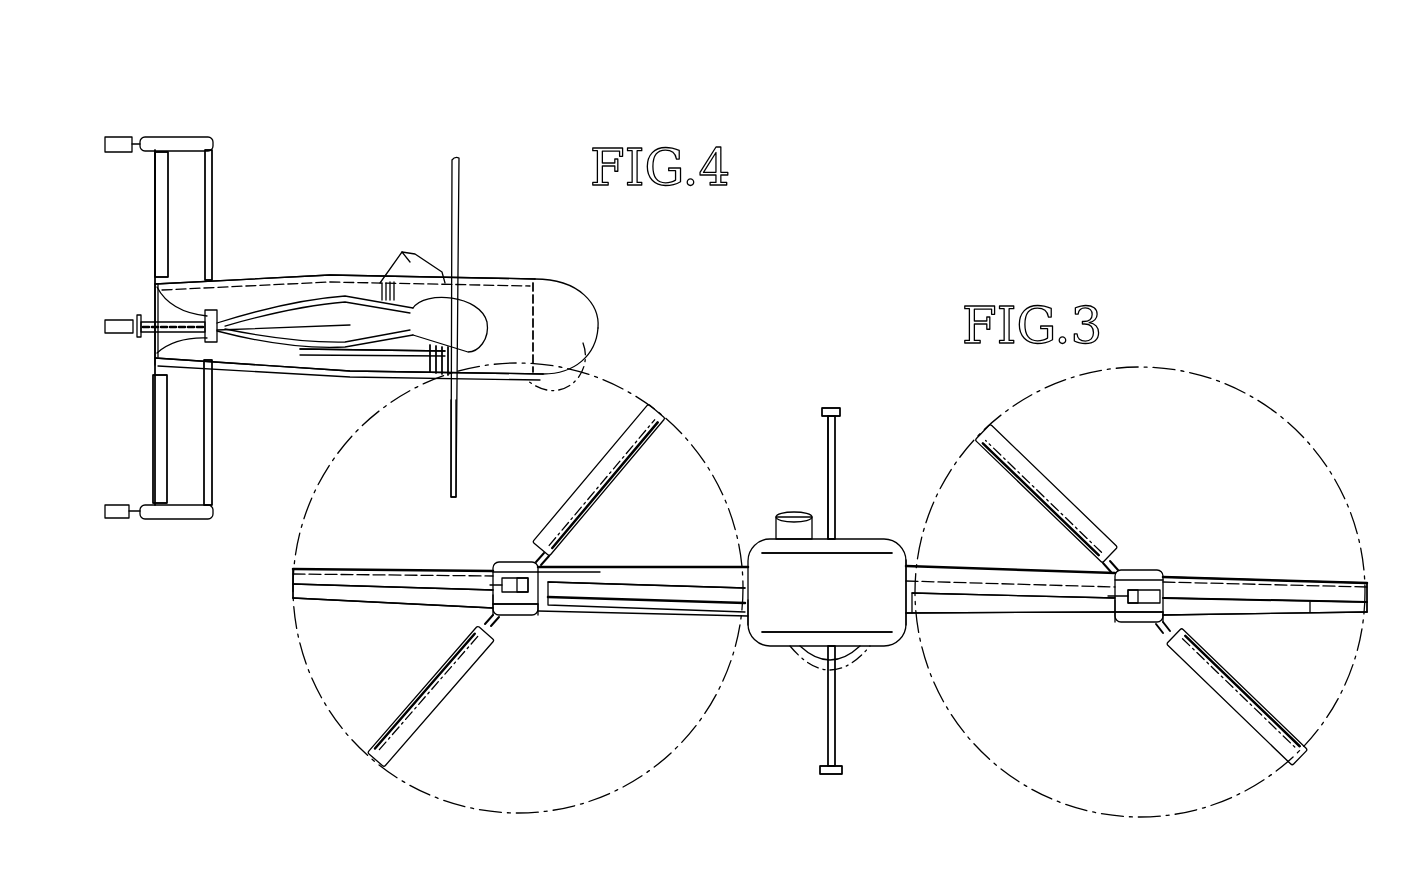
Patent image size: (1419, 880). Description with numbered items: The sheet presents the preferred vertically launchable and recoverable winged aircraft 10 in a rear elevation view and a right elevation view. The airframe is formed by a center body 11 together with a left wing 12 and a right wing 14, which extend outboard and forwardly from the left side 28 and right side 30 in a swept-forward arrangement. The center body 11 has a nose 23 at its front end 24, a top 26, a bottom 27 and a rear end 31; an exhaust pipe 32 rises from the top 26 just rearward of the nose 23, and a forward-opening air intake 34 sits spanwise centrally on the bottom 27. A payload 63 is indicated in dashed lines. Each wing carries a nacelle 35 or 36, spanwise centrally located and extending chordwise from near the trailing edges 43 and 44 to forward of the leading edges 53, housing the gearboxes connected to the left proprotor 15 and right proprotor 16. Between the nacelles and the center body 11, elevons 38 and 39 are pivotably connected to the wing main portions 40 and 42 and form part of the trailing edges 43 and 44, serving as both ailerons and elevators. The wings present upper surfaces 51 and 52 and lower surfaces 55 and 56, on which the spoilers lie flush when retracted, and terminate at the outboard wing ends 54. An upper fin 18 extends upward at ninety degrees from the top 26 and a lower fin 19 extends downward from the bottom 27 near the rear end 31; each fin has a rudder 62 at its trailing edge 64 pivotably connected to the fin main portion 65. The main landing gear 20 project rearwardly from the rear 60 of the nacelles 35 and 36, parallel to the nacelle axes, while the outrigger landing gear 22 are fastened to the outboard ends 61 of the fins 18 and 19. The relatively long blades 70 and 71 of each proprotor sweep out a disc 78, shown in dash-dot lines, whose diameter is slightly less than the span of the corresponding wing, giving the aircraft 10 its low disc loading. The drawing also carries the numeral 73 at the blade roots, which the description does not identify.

In FIG. 4, the vertically launchable and recoverable winged aircraft 10 is at (531, 213).
In FIG. 3, the vertically launchable and recoverable winged aircraft 10 is at (1066, 674).
In FIG. 4, the center body 11 is at (296, 277).
In FIG. 3, the center body 11 is at (915, 556).
In FIG. 3, the left wing 12 is at (371, 570).
In FIG. 4, the right wing 14 is at (349, 300).
In FIG. 3, the right wing 14 is at (1255, 580).
In FIG. 3, the left proprotor 15 is at (506, 626).
In FIG. 4, the right proprotor 16 is at (478, 355).
In FIG. 3, the right proprotor 16 is at (1158, 632).
In FIG. 4, the upper directional stabilizer or fin 18 is at (213, 186).
In FIG. 3, the upper directional stabilizer or fin 18 is at (836, 436).
In FIG. 4, the lower directional stabilizer or fin 19 is at (213, 455).
In FIG. 3, the lower directional stabilizer or fin 19 is at (840, 762).
In FIG. 4, the main landing gear 20 is at (121, 335).
In FIG. 3, the main landing gear 20 is at (515, 578).
In FIG. 4, the outrigger landing gear 22 is at (107, 150).
In FIG. 3, the outrigger landing gear 22 is at (838, 408).
In FIG. 4, the nose 23 is at (570, 290).
In FIG. 4, the front end 24 is at (599, 318).
In FIG. 4, the top 26 is at (255, 278).
In FIG. 3, the top 26 is at (878, 545).
In FIG. 4, the bottom 27 is at (315, 373).
In FIG. 3, the bottom 27 is at (775, 646).
In FIG. 3, the left side 28 is at (754, 646).
In FIG. 4, the right side 30 is at (242, 303).
In FIG. 3, the right side 30 is at (915, 627).
In FIG. 4, the rear end 31 is at (155, 292).
In FIG. 3, the rear end 31 is at (839, 592).
In FIG. 4, the exhaust pipe 32 is at (404, 262).
In FIG. 3, the exhaust pipe 32 is at (789, 512).
In FIG. 4, the air intake 34 is at (411, 373).
In FIG. 3, the air intake 34 is at (811, 662).
In FIG. 3, the nacelle 35 is at (540, 612).
In FIG. 4, the nacelle 36 is at (382, 352).
In FIG. 3, the nacelle 36 is at (1119, 619).
In FIG. 3, the elevon 38 is at (680, 604).
In FIG. 3, the elevon 39 is at (999, 600).
In FIG. 3, the wing main portion 40 is at (639, 566).
In FIG. 3, the wing main portion 42 is at (979, 575).
In FIG. 3, the wing trailing edge 43 is at (374, 591).
In FIG. 4, the wing trailing edge 44 is at (221, 345).
In FIG. 3, the wing trailing edge 44 is at (1310, 606).
In FIG. 3, the upper surface 51 is at (696, 566).
In FIG. 4, the upper surface 52 is at (330, 300).
In FIG. 3, the upper surface 52 is at (1215, 580).
In FIG. 4, the wing leading edge 53 is at (454, 305).
In FIG. 4, the outboard wing end 54 is at (345, 347).
In FIG. 3, the outboard wing end 54 is at (293, 578).
In FIG. 3, the lower surface 55 is at (424, 607).
In FIG. 4, the lower surface 56 is at (291, 346).
In FIG. 3, the lower surface 56 is at (1249, 613).
In FIG. 4, the rear of nacelle 60 is at (160, 286).
In FIG. 3, the rear of nacelle 60 is at (495, 565).
In FIG. 4, the outboard end of fin 61 is at (215, 144).
In FIG. 3, the outboard end of fin 61 is at (825, 413).
In FIG. 4, the rudder 62 is at (155, 203).
In FIG. 3, the rudder 62 is at (836, 470).
In FIG. 4, the payload 63 is at (600, 352).
In FIG. 3, the payload 63 is at (860, 666).
In FIG. 4, the fin trailing edge 64 is at (155, 172).
In FIG. 3, the fin trailing edge 64 is at (836, 505).
In FIG. 4, the fin main portion 65 is at (193, 211).
In FIG. 4, the blade 70 is at (460, 180).
In FIG. 3, the blade 70 is at (659, 425).
In FIG. 4, the blade 71 is at (450, 452).
In FIG. 3, the blade 71 is at (424, 735).
In FIG. 3, the blade hinge 73 is at (560, 556).
In FIG. 3, the disc 78 is at (650, 792).